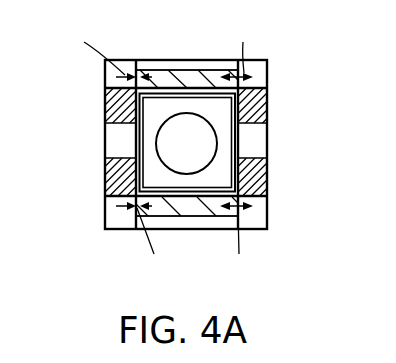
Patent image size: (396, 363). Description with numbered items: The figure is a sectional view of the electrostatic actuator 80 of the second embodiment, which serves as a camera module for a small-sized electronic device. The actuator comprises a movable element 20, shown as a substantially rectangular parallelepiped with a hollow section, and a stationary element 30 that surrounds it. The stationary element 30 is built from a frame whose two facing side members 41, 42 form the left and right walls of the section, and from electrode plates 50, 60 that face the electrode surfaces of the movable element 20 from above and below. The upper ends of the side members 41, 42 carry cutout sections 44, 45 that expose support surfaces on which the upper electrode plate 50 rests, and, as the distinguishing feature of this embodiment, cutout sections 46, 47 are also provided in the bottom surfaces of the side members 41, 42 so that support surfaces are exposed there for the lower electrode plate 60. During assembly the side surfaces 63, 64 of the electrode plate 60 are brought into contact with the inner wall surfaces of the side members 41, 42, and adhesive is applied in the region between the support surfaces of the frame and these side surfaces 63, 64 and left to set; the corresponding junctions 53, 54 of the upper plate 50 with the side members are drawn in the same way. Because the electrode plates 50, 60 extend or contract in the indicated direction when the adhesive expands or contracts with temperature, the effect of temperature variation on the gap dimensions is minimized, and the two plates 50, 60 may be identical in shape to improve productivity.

The movable element 20 is at (148, 118).
The stationary element 30 is at (268, 75).
The side member 41 is at (107, 167).
The side member 42 is at (268, 170).
The cutout section 44 is at (110, 76).
The cutout section 45 is at (258, 68).
The cutout section 46 is at (114, 218).
The cutout section 47 is at (262, 220).
The electrode plate 50 is at (167, 75).
The electrode plate 60 is at (195, 216).
The upper left joint 53 is at (136, 77).
The upper right joint 54 is at (237, 76).
The side surface 63 is at (130, 204).
The side surface 64 is at (240, 205).
The electrostatic actuator 80 is at (278, 117).